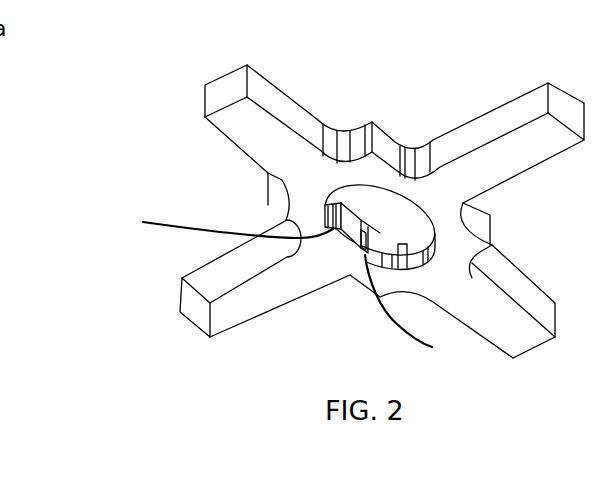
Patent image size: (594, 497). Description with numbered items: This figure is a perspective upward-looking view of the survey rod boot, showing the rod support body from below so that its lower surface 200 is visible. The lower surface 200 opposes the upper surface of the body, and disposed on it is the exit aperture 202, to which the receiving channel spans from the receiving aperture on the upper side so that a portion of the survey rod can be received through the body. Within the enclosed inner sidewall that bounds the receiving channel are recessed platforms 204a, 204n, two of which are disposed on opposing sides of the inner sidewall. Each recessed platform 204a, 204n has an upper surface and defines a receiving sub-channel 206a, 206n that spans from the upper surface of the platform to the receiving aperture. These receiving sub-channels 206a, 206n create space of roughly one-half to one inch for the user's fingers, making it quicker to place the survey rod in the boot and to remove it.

The lower surface 200 is at (228, 305).
The exit aperture 202 is at (373, 205).
The recessed platform 204a is at (210, 223).
The recessed platform 204n is at (425, 308).
The receiving sub-channel 206a is at (327, 213).
The receiving sub-channel 206n is at (367, 237).